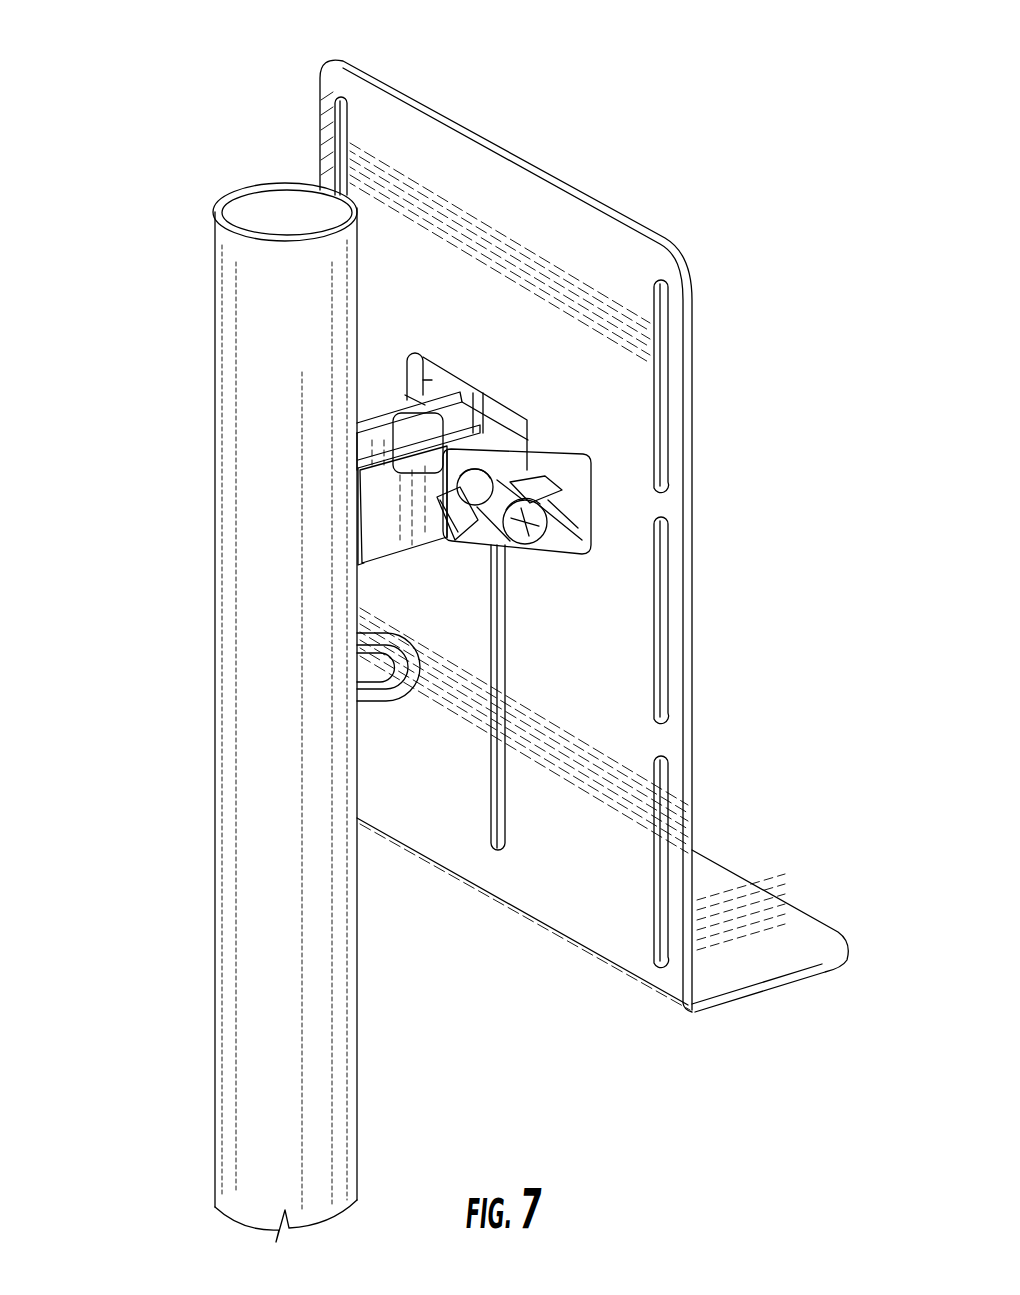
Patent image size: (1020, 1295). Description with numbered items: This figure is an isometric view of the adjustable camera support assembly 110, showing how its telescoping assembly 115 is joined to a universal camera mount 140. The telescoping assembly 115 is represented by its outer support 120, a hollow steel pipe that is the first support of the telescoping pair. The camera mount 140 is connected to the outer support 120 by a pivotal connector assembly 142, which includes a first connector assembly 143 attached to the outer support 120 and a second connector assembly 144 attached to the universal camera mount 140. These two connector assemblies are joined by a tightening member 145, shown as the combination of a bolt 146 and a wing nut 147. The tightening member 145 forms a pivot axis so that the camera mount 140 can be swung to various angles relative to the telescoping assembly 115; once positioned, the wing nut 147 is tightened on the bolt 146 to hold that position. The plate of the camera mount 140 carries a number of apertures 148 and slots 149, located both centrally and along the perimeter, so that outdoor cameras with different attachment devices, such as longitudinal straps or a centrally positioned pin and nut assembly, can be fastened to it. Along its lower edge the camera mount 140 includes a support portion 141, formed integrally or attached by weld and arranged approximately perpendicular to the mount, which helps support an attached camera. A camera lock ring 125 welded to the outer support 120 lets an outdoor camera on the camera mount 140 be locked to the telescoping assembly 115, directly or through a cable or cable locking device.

The adjustable camera support assembly 110 is at (152, 152).
The telescoping assembly 115 is at (160, 632).
The outer support 120 is at (268, 906).
The camera lock ring 125 is at (374, 705).
The universal camera mount 140 is at (507, 173).
The support portion 141 is at (790, 938).
The pivotal connector assembly 142 is at (380, 397).
The first connector assembly 143 is at (375, 500).
The second connector assembly 144 is at (457, 413).
The tightening member 145 is at (488, 455).
The bolt 146 is at (545, 523).
The wing nut 147 is at (560, 467).
The apertures 148 is at (410, 380).
The slots 149 is at (347, 112).